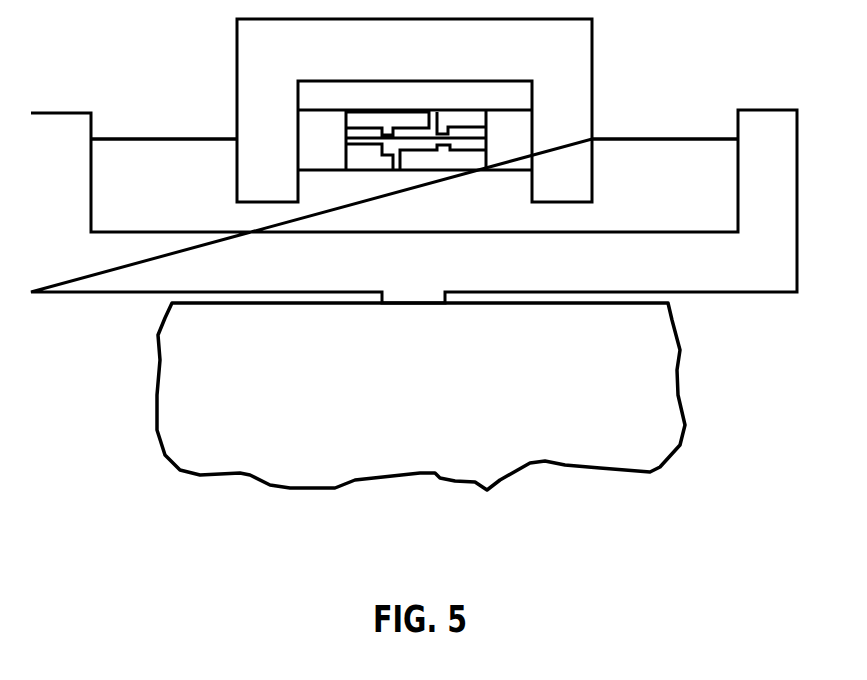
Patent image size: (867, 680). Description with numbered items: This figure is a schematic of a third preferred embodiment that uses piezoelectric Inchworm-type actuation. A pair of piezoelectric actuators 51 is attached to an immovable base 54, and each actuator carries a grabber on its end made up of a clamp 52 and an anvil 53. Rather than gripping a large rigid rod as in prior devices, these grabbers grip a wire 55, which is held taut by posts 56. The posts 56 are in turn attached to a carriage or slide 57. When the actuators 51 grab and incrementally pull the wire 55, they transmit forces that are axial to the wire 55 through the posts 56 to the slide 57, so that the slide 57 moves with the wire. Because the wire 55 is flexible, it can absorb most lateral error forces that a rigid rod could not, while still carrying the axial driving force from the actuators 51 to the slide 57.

The piezoelectric actuator 51 is at (515, 160).
The clamp 52 is at (410, 122).
The anvil 53 is at (457, 120).
The immovable base 54 is at (252, 43).
The wire 55 is at (200, 138).
The post 56 is at (49, 130).
The carriage or slide 57 is at (313, 475).